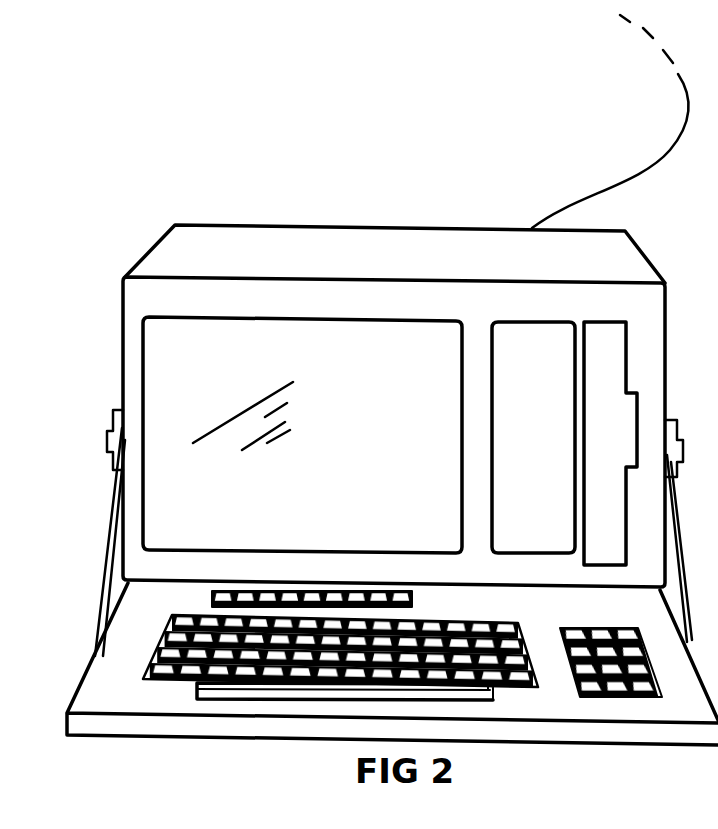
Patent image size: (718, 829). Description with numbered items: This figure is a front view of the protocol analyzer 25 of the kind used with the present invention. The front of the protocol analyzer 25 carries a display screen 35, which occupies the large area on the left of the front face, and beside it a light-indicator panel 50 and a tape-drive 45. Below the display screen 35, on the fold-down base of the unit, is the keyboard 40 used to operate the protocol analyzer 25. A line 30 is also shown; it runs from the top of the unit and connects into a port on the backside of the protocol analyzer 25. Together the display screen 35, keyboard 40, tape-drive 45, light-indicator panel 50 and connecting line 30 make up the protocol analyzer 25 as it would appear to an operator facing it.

The protocol analyzer 25 is at (332, 228).
The line 30 is at (588, 193).
The display screen 35 is at (163, 369).
The keyboard 40 is at (497, 695).
The tape-drive 45 is at (640, 402).
The light-indicator panel 50 is at (523, 335).